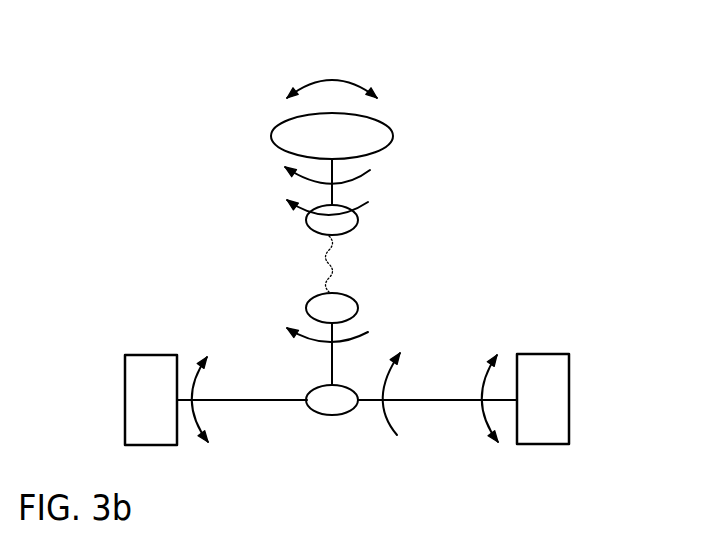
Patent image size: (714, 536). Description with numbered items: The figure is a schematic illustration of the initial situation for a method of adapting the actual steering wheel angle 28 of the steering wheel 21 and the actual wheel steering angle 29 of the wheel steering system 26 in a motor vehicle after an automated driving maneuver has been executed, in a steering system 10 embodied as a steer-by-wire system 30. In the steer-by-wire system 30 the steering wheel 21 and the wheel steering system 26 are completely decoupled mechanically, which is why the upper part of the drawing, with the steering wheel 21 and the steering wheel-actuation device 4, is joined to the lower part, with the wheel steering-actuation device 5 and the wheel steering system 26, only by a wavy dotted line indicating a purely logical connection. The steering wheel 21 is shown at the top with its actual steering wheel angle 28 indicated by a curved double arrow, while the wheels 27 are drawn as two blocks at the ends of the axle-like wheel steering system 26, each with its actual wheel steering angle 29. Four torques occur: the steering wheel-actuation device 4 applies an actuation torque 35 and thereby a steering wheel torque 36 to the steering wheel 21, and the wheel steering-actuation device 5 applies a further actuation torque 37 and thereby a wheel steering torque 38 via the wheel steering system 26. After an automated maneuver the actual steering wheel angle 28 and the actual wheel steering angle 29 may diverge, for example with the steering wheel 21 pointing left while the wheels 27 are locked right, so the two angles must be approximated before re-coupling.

The steering system 10 is at (227, 138).
The steer-by-wire system 30 is at (345, 253).
The steering wheel 21 is at (390, 135).
The actual steering wheel angle 28 is at (355, 87).
The steering wheel torque 36 is at (315, 180).
The steering wheel-actuation device 4 is at (357, 218).
The actuation torque 35 is at (300, 213).
The wheel steering-actuation device 5 is at (357, 307).
The further actuation torque 37 is at (315, 342).
The wheel steering system 26 is at (323, 413).
The wheel steering torque 38 is at (388, 422).
The wheels 27 is at (125, 394).
The actual wheel steering angle 29 is at (195, 370).